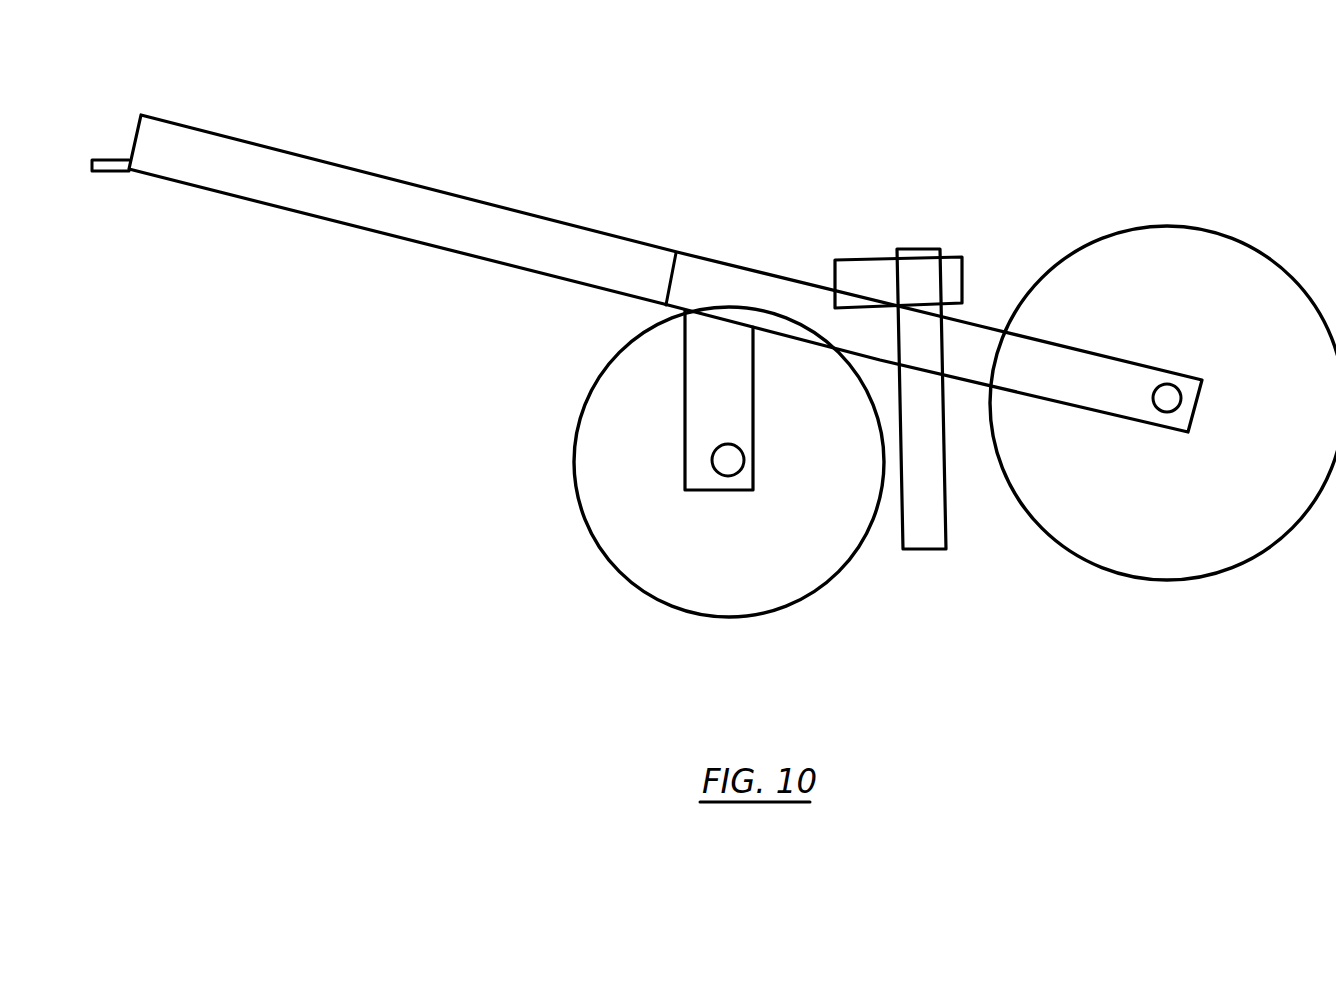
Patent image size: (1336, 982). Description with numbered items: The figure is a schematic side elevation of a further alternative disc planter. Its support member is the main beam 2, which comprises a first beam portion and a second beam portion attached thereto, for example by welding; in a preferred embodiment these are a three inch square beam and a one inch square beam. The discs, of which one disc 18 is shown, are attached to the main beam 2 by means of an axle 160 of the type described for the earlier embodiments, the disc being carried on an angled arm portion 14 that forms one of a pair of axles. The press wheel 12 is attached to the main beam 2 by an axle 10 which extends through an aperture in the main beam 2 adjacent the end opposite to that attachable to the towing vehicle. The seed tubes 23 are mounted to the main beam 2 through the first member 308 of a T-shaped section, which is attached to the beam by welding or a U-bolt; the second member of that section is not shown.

The main beam 2 is at (445, 190).
The axle 160 is at (700, 363).
The disc 18 is at (580, 514).
The arm portion 14 is at (728, 462).
The seed tube 23 is at (913, 247).
The first member 308 is at (962, 273).
The press wheel 12 is at (1118, 575).
The axle 10 is at (1167, 402).